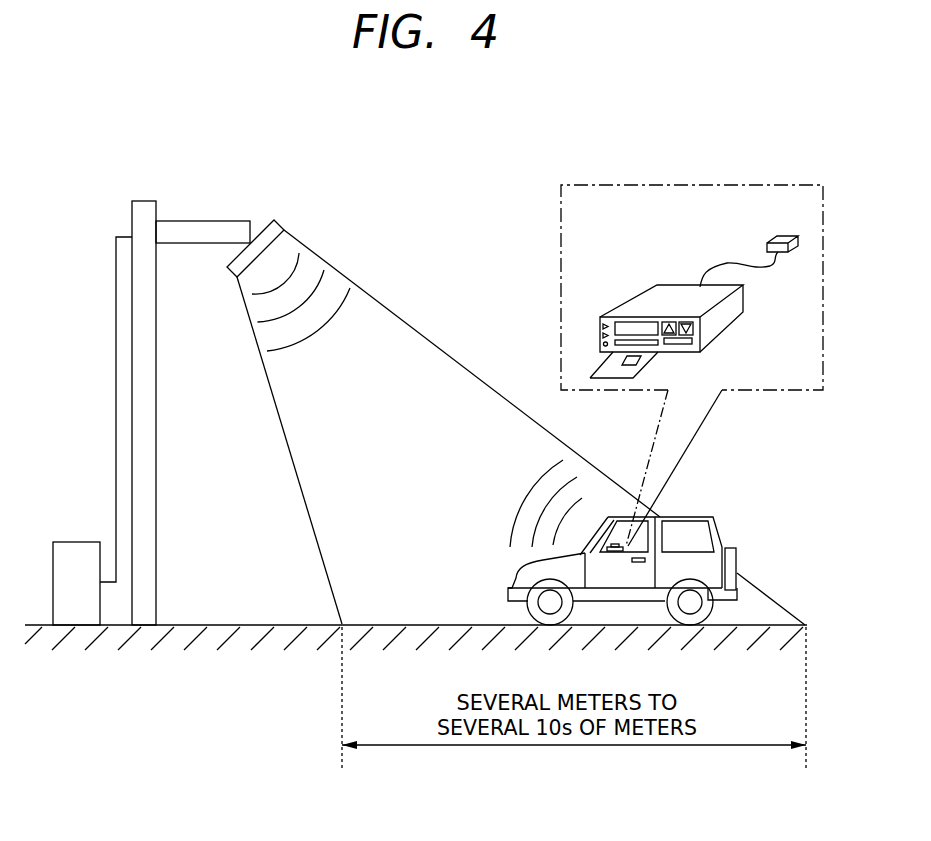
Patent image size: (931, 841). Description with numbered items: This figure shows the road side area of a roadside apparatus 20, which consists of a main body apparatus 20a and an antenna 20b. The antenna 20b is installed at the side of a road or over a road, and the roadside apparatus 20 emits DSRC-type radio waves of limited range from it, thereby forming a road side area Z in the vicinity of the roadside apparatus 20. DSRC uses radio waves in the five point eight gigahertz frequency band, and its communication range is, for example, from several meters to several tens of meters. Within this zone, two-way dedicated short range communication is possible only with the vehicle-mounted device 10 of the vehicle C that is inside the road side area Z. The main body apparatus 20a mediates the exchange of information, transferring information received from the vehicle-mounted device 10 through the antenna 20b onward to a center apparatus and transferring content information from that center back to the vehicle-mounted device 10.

The roadside apparatus 20 is at (100, 126).
The main body apparatus 20a is at (76, 542).
The antenna 20b is at (274, 220).
The road side area Z is at (428, 340).
The vehicle C is at (722, 530).
The vehicle-mounted device 10 is at (640, 287).